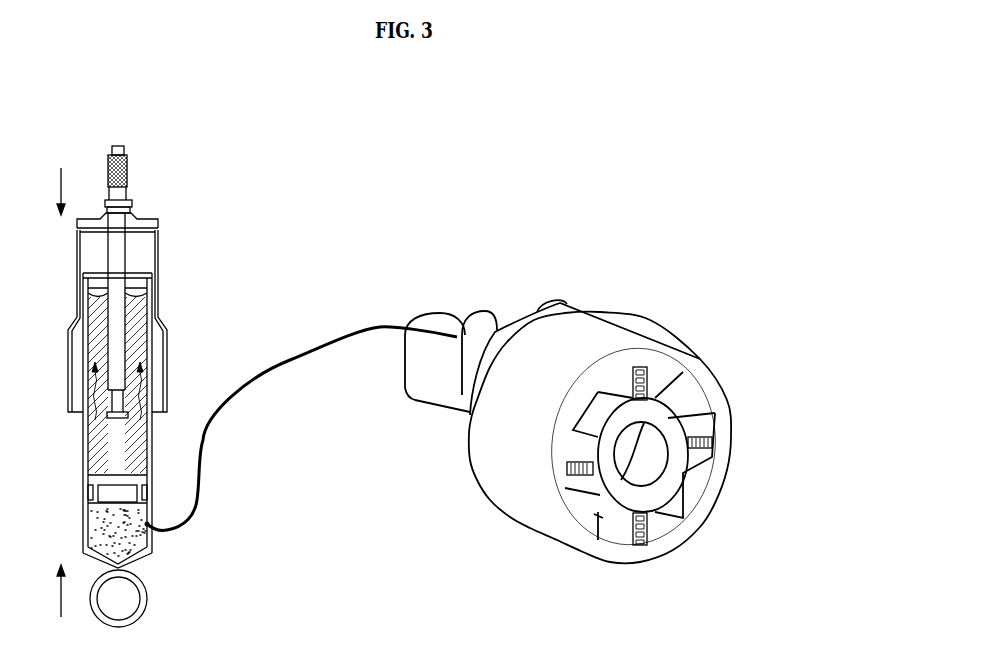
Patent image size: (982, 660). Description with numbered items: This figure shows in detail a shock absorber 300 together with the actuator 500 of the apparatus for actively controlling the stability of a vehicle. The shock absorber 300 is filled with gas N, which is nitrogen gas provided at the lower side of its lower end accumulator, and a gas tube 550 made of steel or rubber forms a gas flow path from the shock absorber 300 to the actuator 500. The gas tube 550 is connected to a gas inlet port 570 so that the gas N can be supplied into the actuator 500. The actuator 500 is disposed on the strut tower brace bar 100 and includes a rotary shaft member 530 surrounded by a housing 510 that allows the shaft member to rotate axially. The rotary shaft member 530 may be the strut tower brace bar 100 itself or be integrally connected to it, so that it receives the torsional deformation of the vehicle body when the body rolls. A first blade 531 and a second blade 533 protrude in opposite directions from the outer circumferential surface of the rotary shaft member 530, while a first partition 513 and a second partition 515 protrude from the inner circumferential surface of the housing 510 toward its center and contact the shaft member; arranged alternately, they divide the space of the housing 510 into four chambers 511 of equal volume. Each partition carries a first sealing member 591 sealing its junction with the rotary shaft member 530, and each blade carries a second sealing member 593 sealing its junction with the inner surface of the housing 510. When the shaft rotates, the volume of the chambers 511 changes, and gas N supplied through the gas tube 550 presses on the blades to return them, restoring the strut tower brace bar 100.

The shock absorber 300 is at (146, 178).
The gas N is at (140, 542).
The gas tube 550 is at (365, 327).
The strut tower brace bar 100 is at (437, 320).
The gas inlet port 570 is at (485, 330).
The actuator 500 is at (563, 288).
The housing 510 is at (527, 450).
The rotary shaft member 530 is at (684, 493).
The first blade 531 is at (690, 413).
The second blade 533 is at (703, 428).
The first partition 513 is at (668, 370).
The first sealing member 591 is at (648, 368).
The second sealing member 593 is at (715, 447).
The chamber 511 is at (603, 525).
The second partition 515 is at (618, 535).